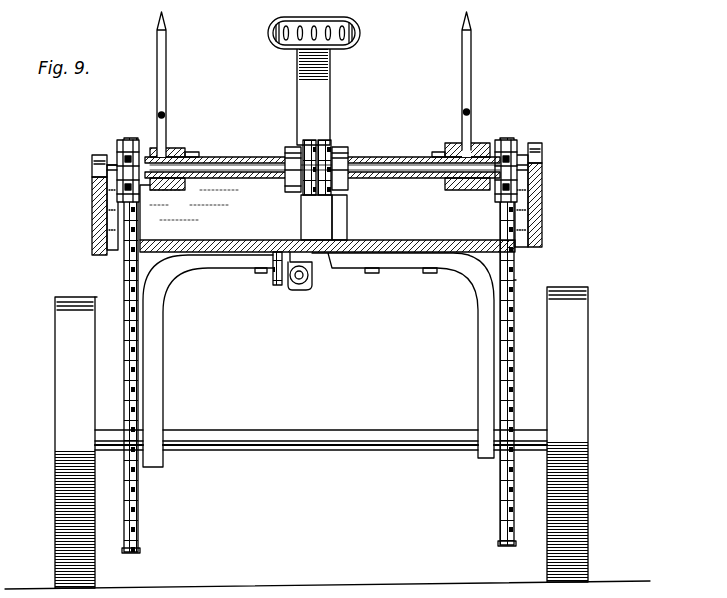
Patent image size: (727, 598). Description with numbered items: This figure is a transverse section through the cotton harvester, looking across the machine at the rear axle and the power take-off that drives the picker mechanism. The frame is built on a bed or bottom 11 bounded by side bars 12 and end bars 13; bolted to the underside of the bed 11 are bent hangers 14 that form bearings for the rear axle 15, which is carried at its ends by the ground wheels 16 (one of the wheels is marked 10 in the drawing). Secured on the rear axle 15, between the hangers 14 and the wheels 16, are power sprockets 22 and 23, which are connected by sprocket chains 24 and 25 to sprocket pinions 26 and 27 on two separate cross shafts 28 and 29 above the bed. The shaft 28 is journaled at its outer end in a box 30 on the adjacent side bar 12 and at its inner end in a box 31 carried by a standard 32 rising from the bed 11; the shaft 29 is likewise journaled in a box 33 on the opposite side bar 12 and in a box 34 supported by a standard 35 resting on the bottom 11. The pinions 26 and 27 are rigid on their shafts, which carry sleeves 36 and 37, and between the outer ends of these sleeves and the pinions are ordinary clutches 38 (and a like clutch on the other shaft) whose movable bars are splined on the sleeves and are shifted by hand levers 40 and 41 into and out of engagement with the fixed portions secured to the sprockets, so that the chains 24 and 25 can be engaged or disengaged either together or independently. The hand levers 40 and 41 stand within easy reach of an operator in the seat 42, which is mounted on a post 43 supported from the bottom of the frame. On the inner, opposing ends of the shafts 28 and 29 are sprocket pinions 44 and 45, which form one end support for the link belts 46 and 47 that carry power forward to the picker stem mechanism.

The wheel 10 is at (590, 386).
The bed or bottom 11 is at (408, 240).
The side bars 12 is at (92, 205).
The end bars 13 is at (494, 312).
The bent hangers 14 is at (163, 378).
The rear axle 15 is at (310, 430).
The ground wheels 16 is at (56, 432).
The power sprocket 22 is at (140, 528).
The power sprocket 23 is at (500, 480).
The sprocket chain 24 is at (83, 283).
The sprocket chain 25 is at (516, 280).
The sprocket pinion 26 is at (127, 140).
The sprocket pinion 27 is at (507, 140).
The shaft 28 is at (213, 157).
The shaft 29 is at (396, 157).
The box 30 is at (92, 163).
The box 31 is at (290, 148).
The standard 32 is at (300, 200).
The box 33 is at (542, 147).
The box 34 is at (342, 148).
The standard 35 is at (340, 203).
The sleeve 36 is at (245, 157).
The sleeve 37 is at (455, 148).
The clutch 38 is at (172, 148).
The hand lever 40 is at (166, 80).
The hand lever 41 is at (471, 62).
The seat 42 is at (335, 22).
The post 43 is at (330, 91).
The sprocket pinion 44 is at (306, 140).
The sprocket pinion 45 is at (328, 140).
The link belt 46 is at (290, 192).
The link belt 47 is at (334, 206).